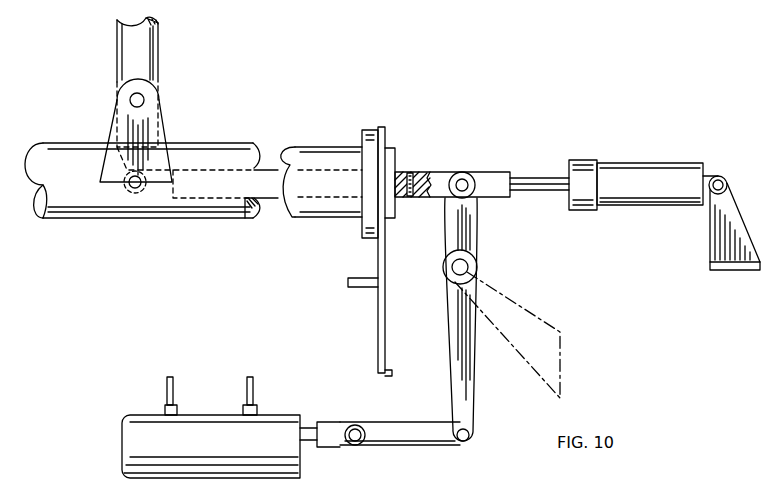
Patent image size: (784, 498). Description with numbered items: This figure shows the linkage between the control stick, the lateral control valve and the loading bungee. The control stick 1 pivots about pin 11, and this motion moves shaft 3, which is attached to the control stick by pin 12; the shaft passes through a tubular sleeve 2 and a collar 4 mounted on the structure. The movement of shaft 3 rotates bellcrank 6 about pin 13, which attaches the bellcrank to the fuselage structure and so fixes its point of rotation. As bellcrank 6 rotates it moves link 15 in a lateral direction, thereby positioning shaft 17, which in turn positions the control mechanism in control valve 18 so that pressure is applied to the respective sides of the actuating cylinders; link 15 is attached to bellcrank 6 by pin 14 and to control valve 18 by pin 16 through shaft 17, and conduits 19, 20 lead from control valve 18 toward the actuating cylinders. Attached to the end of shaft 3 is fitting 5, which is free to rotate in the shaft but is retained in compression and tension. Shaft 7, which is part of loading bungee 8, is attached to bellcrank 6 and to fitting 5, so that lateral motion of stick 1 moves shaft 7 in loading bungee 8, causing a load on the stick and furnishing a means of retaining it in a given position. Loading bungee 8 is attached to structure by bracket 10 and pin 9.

The control stick 1 is at (158, 70).
The tubular sleeve 2 is at (326, 147).
The shaft 3 is at (266, 170).
The collar and plate 4 is at (368, 130).
The fitting 5 is at (447, 172).
The bellcrank 6 is at (448, 360).
The shaft 7 is at (540, 178).
The loading bungee 8 is at (628, 205).
The pin 9 is at (716, 194).
The bracket 10 is at (722, 270).
The pin 11 is at (144, 98).
The pin 12 is at (134, 190).
The pin 13 is at (470, 266).
The pin 14 is at (470, 442).
The link 15 is at (392, 422).
The pin 16 is at (360, 444).
The shaft 17 is at (320, 424).
The control valve 18 is at (130, 415).
The conduit 19 is at (248, 395).
The conduit 20 is at (167, 395).